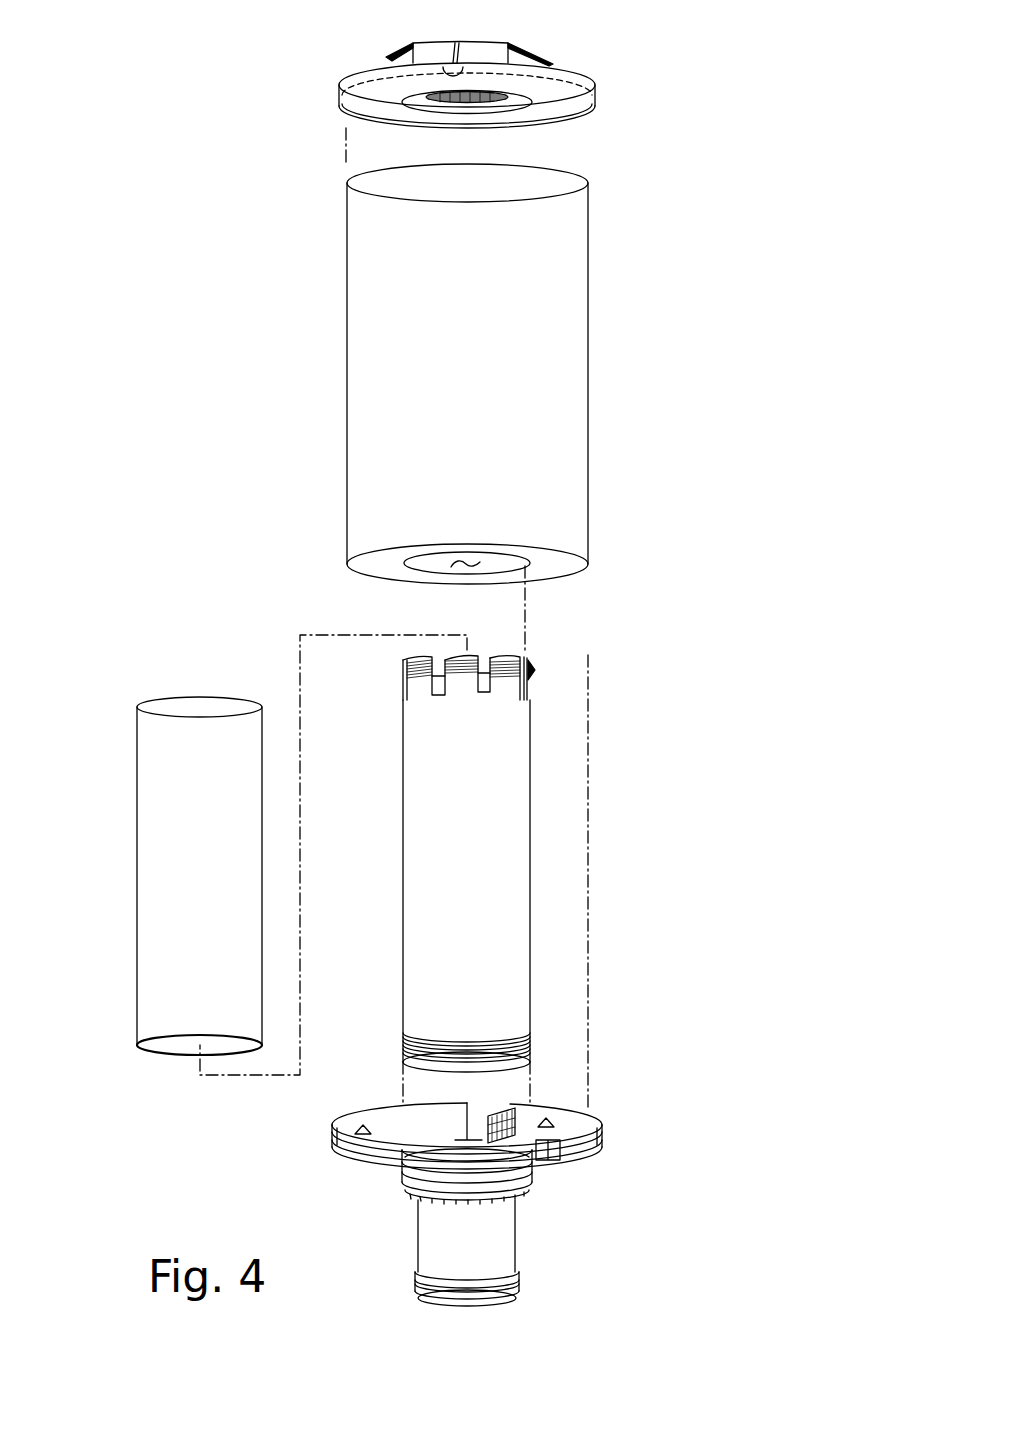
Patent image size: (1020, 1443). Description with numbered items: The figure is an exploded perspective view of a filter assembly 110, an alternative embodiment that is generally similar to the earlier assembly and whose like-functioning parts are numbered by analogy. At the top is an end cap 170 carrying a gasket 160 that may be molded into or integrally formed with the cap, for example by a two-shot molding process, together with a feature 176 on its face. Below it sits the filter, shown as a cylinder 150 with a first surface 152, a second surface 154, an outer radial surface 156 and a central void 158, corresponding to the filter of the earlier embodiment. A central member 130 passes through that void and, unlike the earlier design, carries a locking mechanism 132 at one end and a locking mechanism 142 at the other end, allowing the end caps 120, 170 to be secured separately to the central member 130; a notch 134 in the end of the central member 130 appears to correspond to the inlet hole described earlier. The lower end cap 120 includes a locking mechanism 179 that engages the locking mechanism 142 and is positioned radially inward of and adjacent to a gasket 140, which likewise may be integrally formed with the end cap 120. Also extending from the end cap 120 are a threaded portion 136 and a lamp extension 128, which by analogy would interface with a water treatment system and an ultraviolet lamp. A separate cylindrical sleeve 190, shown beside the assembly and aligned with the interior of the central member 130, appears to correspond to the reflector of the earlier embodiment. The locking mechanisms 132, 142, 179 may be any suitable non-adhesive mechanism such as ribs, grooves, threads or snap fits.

The filter assembly 110 is at (745, 146).
The end cap 120 is at (583, 1199).
The tube 128 is at (490, 1247).
The central member 130 is at (540, 806).
The locking mechanism 132 is at (536, 669).
The notch 134 is at (483, 685).
The threads 136 is at (427, 1193).
The gasket 140 is at (502, 1122).
The locking mechanism 142 is at (430, 1035).
The outer cylinder 150 is at (592, 380).
The bottom rim 152 is at (560, 562).
The top rim 154 is at (565, 176).
The side wall 156 is at (588, 280).
The bottom opening 158 is at (453, 570).
The gasket 160 is at (370, 105).
The end cap 170 is at (358, 48).
The vent 176 is at (468, 97).
The locking mechanism 179 is at (492, 1138).
The insert cylinder 190 is at (185, 768).